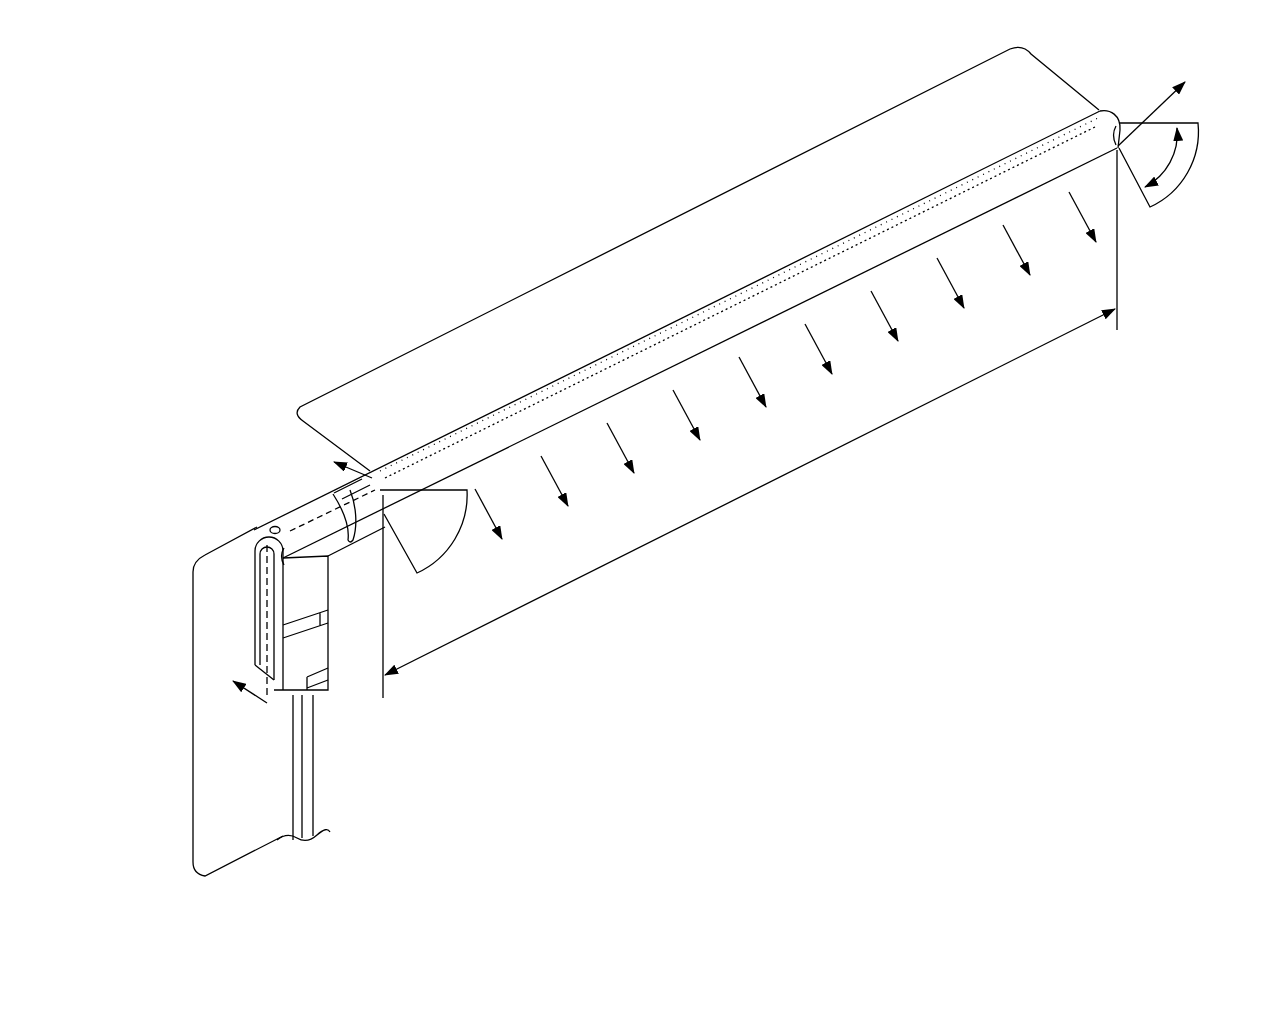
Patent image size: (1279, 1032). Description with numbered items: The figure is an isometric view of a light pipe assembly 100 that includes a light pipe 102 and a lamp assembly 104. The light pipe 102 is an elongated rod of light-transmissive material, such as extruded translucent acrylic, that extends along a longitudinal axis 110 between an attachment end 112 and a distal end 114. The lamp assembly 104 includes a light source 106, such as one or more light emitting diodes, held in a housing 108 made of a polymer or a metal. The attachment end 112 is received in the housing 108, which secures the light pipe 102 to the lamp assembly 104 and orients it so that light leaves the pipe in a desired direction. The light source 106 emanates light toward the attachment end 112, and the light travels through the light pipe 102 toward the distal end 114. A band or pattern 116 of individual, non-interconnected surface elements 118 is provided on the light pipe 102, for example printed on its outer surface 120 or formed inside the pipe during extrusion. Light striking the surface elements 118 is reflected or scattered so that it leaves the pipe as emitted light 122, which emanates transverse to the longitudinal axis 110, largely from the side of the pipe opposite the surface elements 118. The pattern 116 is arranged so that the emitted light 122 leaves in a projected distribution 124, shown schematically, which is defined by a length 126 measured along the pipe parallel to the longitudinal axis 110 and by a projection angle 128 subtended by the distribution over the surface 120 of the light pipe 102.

The light pipe assembly 100 is at (423, 136).
The light pipe 102 is at (687, 318).
The lamp assembly 104 is at (193, 713).
The light source 106 is at (293, 684).
The housing 108 is at (309, 572).
The longitudinal axis 110 is at (1158, 106).
The attachment end 112 is at (328, 491).
The distal end 114 is at (1085, 136).
The pattern 116 is at (656, 230).
The surface elements 118 is at (845, 246).
The outer surface 120 is at (770, 296).
The emitted light 122 is at (1012, 247).
The projected distribution 124 is at (1236, 124).
The length 126 is at (803, 466).
The projection angle 128 is at (1169, 163).